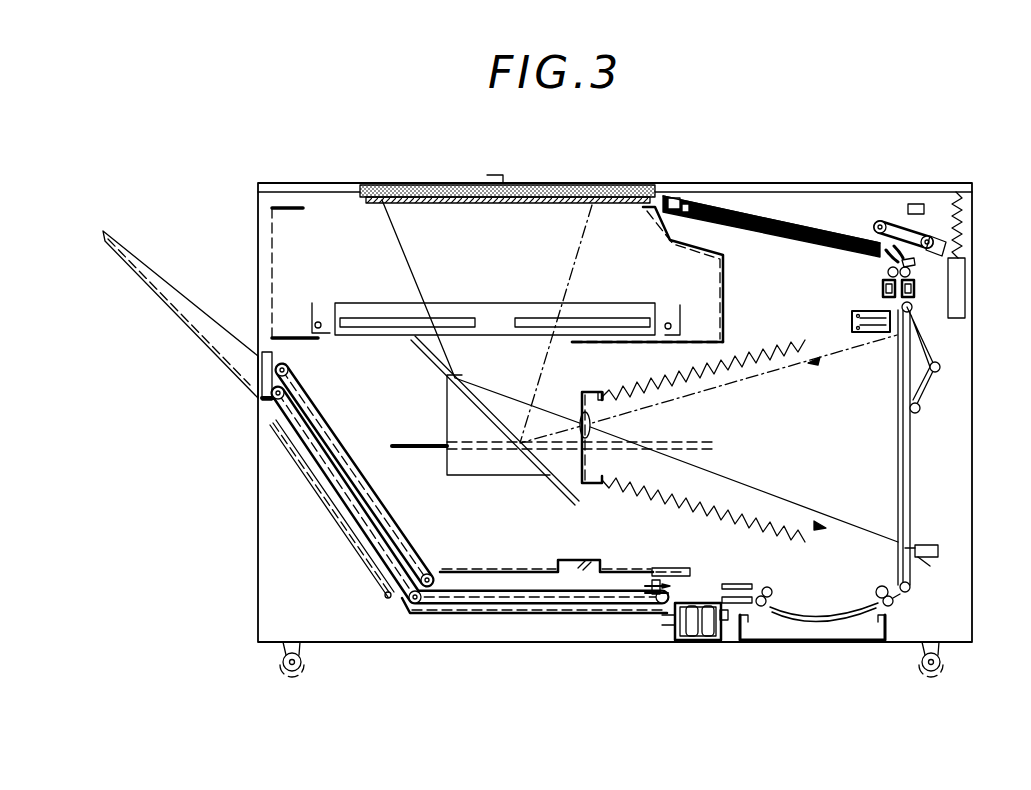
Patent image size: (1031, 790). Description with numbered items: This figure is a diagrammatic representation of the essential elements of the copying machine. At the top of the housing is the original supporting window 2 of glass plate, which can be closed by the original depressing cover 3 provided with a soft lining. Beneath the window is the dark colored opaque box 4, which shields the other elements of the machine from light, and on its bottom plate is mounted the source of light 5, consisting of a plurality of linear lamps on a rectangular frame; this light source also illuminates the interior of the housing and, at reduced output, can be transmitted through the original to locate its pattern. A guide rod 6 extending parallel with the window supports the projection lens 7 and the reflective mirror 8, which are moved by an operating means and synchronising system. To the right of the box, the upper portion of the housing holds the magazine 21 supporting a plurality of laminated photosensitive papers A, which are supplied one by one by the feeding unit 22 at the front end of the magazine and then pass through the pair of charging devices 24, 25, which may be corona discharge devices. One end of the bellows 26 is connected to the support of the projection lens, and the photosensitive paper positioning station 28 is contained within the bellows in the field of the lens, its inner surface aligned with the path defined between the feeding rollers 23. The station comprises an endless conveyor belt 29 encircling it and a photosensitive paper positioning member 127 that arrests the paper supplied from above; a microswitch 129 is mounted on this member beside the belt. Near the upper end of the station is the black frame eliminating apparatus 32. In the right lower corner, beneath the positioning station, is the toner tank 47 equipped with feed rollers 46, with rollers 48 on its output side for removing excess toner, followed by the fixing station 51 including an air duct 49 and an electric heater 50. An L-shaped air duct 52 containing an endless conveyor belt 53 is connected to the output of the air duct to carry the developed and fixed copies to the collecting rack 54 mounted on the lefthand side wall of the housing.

The original supporting window 2 is at (470, 203).
The original depressing cover 3 is at (550, 186).
The dark colored opaque box 4 is at (672, 245).
The source of light 5 is at (320, 320).
The guide rod 6 is at (410, 441).
The projection lens 7 is at (582, 420).
The reflective mirror 8 is at (558, 490).
The magazine 21 is at (798, 242).
The feeding unit 22 is at (900, 222).
The feeding rollers 23 is at (912, 272).
The charging device 24 is at (880, 290).
The charging device 25 is at (917, 290).
The bellows 26 is at (707, 372).
The photosensitive paper positioning station 28 is at (906, 375).
The endless conveyor belt 29 is at (912, 464).
The black frame eliminating apparatus 32 is at (851, 320).
The feed rollers 46 is at (878, 590).
The toner tank 47 is at (862, 632).
The rollers 48 is at (765, 587).
The air duct 49 is at (680, 580).
The electric heater 50 is at (693, 641).
The fixing station 51 is at (665, 630).
The L-shaped air duct 52 is at (480, 570).
The endless conveyor belt 53 is at (480, 603).
The collecting rack 54 is at (172, 312).
The photosensitive paper positioning member 127 is at (924, 560).
The microswitch 129 is at (934, 545).
The photosensitive papers A is at (720, 206).